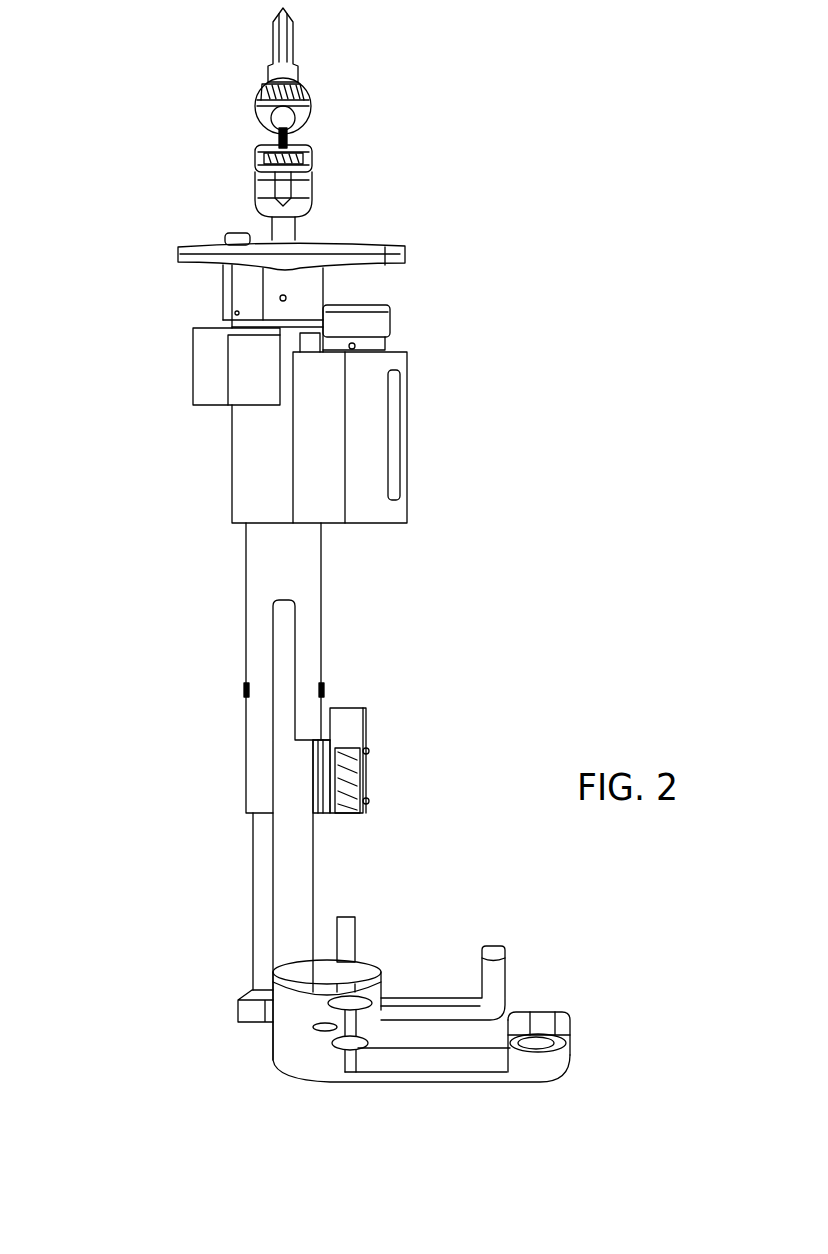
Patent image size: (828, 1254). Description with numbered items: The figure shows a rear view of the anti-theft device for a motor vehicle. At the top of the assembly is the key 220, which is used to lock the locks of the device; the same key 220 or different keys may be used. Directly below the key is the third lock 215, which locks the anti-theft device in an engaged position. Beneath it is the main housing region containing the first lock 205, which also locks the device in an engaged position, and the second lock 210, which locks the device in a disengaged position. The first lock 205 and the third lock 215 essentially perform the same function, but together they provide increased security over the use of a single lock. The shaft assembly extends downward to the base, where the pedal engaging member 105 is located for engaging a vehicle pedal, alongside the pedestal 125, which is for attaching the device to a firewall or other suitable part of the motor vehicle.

The key 220 is at (337, 80).
The third lock 215 is at (322, 220).
The second lock 210 is at (174, 367).
The first lock 205 is at (405, 328).
The pedal engaging member 105 is at (505, 952).
The pedestal 125 is at (572, 1045).